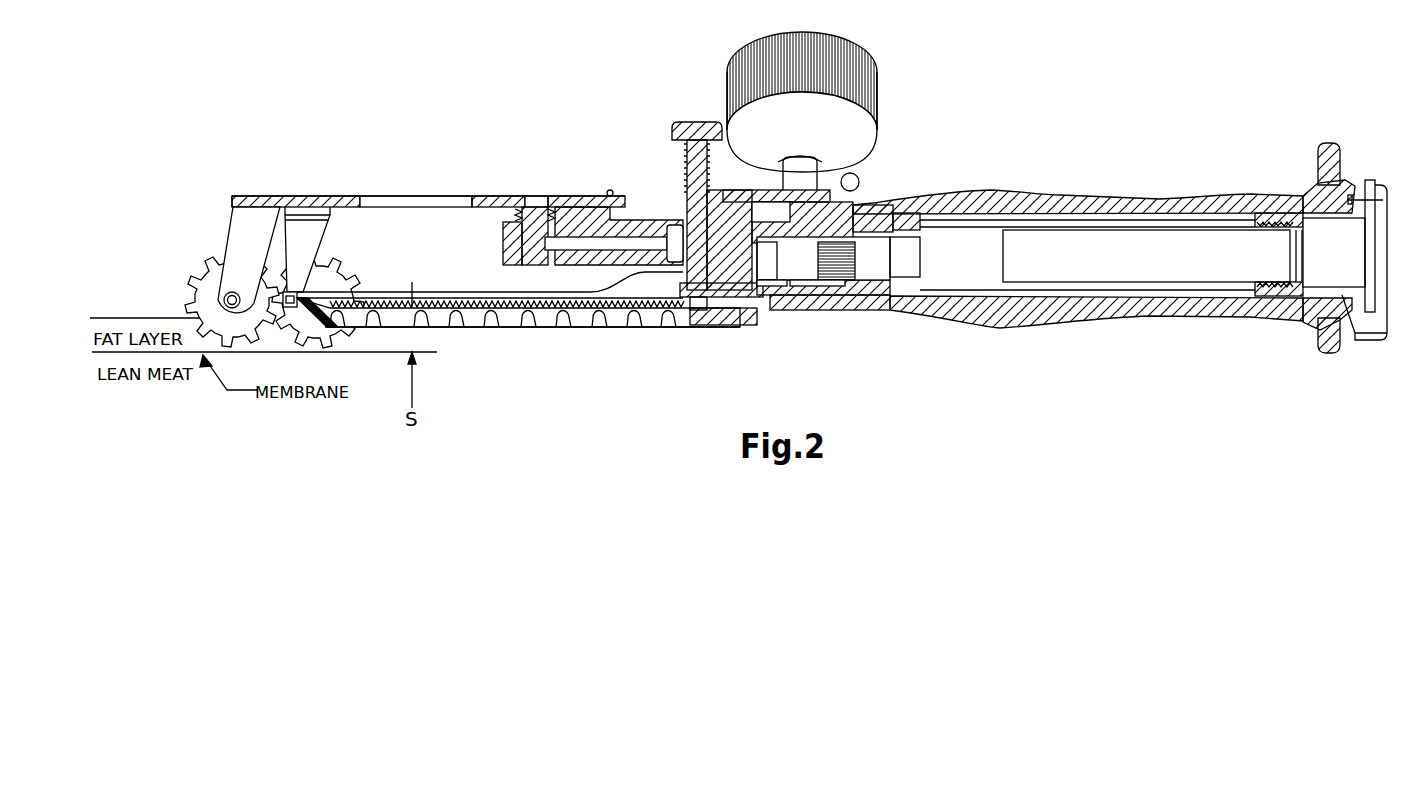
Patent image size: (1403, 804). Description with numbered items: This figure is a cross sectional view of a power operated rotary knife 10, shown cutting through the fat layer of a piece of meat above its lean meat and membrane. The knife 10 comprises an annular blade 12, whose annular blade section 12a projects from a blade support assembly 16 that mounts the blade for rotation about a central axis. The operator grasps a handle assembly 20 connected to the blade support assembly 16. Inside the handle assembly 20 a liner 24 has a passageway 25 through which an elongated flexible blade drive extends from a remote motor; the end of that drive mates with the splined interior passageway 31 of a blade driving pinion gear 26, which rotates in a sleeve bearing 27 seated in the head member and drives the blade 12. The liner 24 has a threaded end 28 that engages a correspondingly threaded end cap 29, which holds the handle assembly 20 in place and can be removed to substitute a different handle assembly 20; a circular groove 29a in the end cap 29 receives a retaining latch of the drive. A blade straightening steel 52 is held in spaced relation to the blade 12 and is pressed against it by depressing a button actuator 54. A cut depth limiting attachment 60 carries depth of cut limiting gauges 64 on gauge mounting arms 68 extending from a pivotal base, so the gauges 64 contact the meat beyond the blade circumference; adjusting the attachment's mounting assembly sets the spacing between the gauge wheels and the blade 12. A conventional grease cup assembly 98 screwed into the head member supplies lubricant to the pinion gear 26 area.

The power operated rotary knife 10 is at (925, 78).
The annular blade 12 is at (480, 326).
The annular blade section 12a is at (447, 325).
The blade support assembly 16 is at (373, 297).
The handle assembly 20 is at (1090, 193).
The liner 24 is at (1060, 231).
The passageway 25 is at (1168, 276).
The blade driving pinion gear 26 is at (762, 288).
The sleeve bearing 27 is at (808, 282).
The threaded end 28 is at (1273, 233).
The end cap 29 is at (1353, 180).
The circular groove 29a is at (1375, 263).
The splined interior passageway 31 is at (833, 243).
The blade straightening steel 52 is at (688, 312).
The button actuator 54 is at (682, 123).
The cut depth limiting attachment 60 is at (368, 179).
The depth of cut limiting gauges 64 is at (205, 285).
The gauge mounting arms 68 is at (245, 233).
The grease cup assembly 98 is at (813, 83).